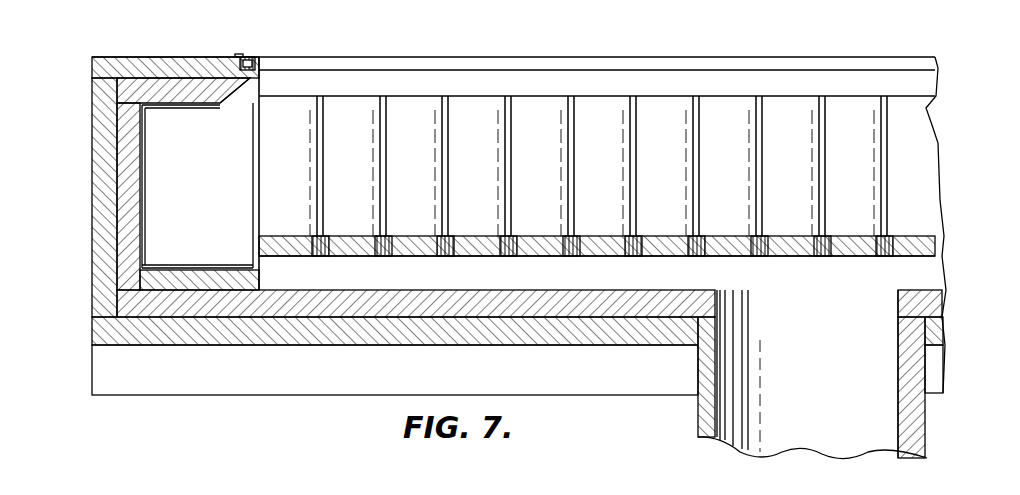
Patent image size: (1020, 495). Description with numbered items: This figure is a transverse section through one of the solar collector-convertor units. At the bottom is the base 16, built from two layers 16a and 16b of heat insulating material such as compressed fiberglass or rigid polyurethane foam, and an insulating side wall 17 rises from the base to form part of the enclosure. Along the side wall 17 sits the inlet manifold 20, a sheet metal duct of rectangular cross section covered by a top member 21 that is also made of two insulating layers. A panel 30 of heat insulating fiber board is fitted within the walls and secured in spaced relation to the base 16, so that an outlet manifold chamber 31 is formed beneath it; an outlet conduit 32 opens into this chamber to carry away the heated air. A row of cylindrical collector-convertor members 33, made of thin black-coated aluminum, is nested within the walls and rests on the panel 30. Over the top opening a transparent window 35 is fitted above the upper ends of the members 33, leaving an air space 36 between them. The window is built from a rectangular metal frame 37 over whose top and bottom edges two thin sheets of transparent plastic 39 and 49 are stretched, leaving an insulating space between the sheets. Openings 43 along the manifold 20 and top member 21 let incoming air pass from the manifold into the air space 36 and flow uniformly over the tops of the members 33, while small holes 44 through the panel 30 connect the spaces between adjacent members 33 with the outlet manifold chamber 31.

The base 16 is at (396, 350).
The layer of heat insulating material 16a is at (522, 288).
The layer of heat insulating material 16b is at (555, 325).
The side wall 17 is at (92, 172).
The inlet manifold 20 is at (150, 218).
The top member 21 is at (186, 57).
The panel 30 is at (614, 224).
The outlet manifold chamber 31 is at (268, 262).
The outlet conduit 32 is at (736, 447).
The cylindrical collector-convertor member 33 is at (465, 100).
The transparent window 35 is at (613, 40).
The air space 36 is at (311, 85).
The metal frame 37 is at (258, 54).
The sheet of transparent plastic 39 is at (724, 57).
The opening 43 is at (246, 108).
The hole 44 is at (405, 250).
The sheet of transparent plastic 49 is at (772, 70).